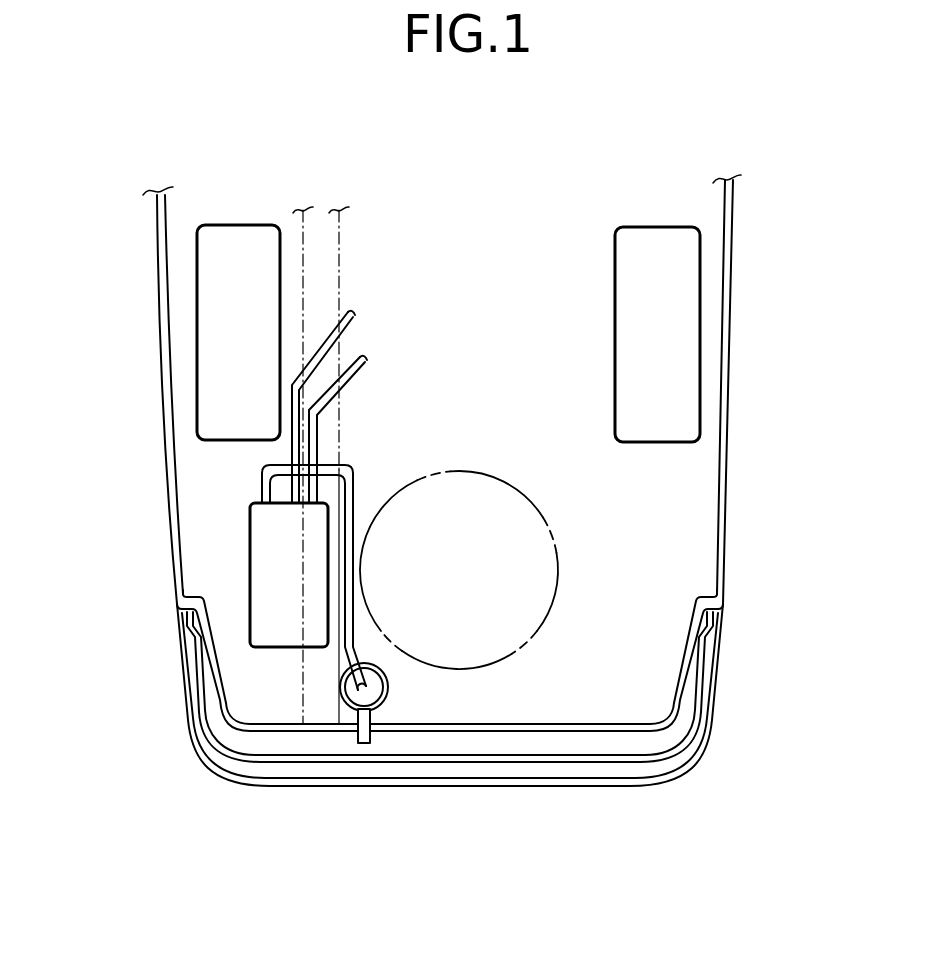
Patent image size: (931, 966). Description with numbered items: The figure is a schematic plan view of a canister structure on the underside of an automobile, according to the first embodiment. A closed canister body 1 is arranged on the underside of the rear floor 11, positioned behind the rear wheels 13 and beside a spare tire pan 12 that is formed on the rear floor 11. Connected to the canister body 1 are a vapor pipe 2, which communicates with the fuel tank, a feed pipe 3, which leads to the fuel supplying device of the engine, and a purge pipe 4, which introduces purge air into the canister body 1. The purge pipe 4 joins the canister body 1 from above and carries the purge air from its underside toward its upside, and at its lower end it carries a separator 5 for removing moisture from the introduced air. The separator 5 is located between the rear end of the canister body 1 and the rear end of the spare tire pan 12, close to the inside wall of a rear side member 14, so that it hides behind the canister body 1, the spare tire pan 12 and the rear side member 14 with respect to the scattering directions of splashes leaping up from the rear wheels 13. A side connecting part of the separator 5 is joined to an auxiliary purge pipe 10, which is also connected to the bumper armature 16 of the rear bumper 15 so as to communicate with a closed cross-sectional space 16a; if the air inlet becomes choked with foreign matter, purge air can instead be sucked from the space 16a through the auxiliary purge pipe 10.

The canister body 1 is at (250, 540).
The vapor pipe 2 is at (364, 360).
The feed pipe 3 is at (352, 315).
The purge pipe 4 is at (357, 473).
The separator 5 is at (388, 690).
The auxiliary purge pipe 10 is at (357, 742).
The rear floor 11 is at (697, 497).
The spare tire pan 12 is at (486, 470).
The rear wheels 13 is at (198, 296).
The rear side member 14 is at (303, 672).
The rear bumper 15 is at (423, 788).
The bumper armature 16 is at (552, 763).
The closed cross-sectional space 16a is at (502, 752).